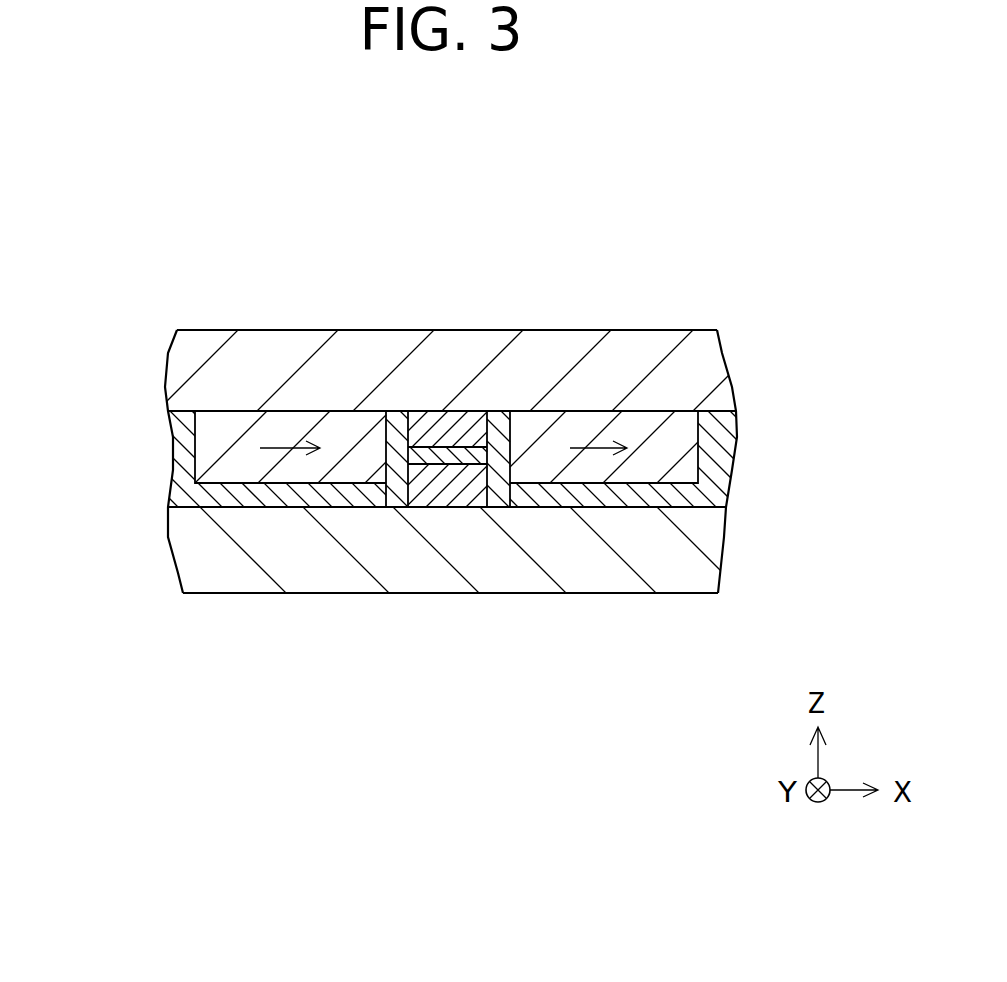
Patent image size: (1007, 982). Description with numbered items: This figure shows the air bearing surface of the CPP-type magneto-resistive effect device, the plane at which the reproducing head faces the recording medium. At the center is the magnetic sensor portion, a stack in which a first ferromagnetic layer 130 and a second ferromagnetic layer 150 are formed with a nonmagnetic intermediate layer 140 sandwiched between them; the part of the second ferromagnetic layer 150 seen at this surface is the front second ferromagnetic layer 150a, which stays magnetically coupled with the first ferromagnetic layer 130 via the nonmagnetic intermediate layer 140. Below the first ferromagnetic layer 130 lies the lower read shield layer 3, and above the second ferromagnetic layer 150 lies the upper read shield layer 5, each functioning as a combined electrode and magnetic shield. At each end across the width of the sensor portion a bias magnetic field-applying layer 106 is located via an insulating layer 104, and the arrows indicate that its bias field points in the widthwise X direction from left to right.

The lower read shield layer 3 is at (320, 572).
The upper read shield layer 5 is at (545, 350).
The insulating layer 104 is at (222, 495).
The bias magnetic field-applying layer 106 is at (222, 442).
The first ferromagnetic layer 130 is at (443, 485).
The nonmagnetic intermediate layer 140 is at (465, 455).
The second ferromagnetic layer 150 is at (436, 343).
The front second ferromagnetic layer 150a is at (440, 432).